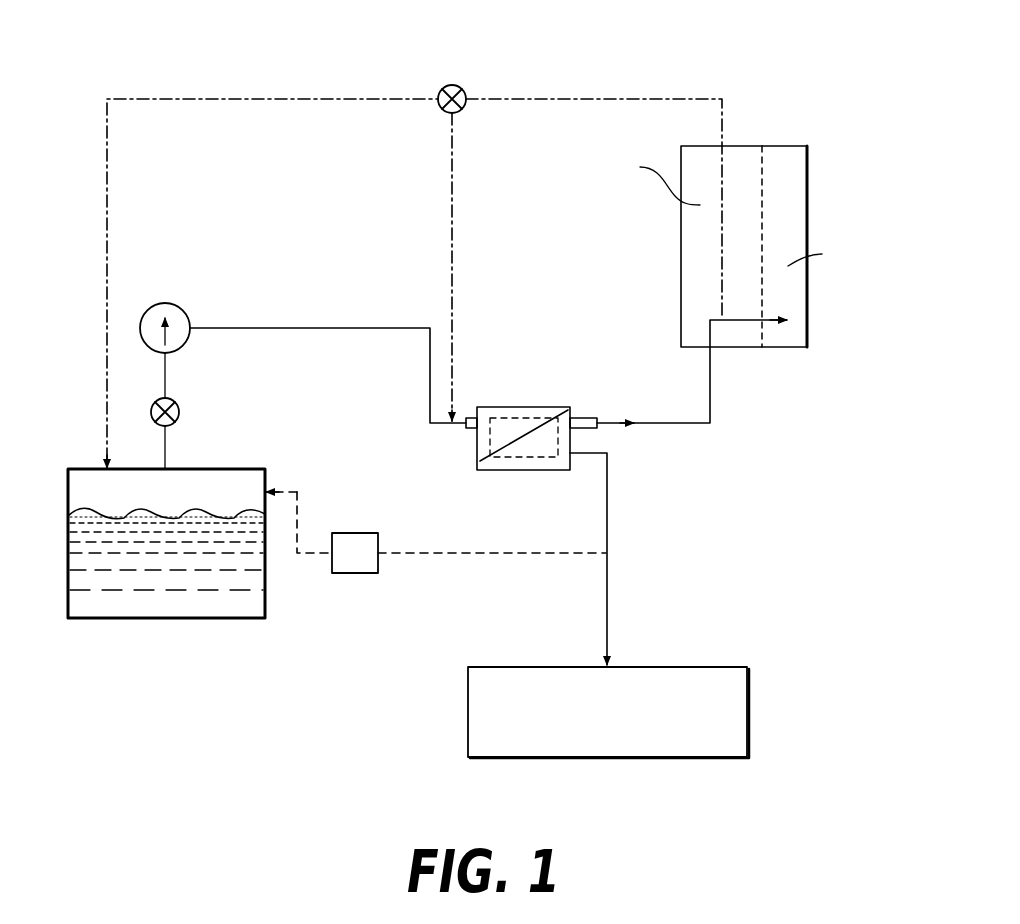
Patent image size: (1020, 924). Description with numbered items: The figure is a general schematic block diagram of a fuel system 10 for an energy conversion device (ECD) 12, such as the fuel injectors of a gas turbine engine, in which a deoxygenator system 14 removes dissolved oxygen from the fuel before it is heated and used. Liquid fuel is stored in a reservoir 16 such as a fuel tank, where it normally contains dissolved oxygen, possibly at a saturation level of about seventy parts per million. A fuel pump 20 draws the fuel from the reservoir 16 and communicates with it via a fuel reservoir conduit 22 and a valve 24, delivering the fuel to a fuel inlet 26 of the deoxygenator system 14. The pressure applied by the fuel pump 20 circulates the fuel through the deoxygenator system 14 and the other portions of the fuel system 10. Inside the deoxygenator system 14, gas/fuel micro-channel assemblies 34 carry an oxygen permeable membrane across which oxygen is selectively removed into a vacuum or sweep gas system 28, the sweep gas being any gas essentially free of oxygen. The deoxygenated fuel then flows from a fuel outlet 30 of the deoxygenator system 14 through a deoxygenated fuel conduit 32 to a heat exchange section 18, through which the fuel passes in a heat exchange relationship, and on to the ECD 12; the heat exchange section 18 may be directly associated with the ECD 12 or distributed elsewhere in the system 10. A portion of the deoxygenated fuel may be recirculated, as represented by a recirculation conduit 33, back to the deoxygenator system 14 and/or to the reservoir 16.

The fuel system 10 is at (690, 177).
The energy conversion device (ECD) 12 is at (785, 163).
The deoxygenator system 14 is at (511, 384).
The reservoir 16 is at (93, 612).
The heat exchange section 18 is at (692, 274).
The fuel pump 20 is at (166, 303).
The fuel reservoir conduit 22 is at (167, 378).
The valve 24 is at (180, 412).
The fuel inlet 26 is at (472, 431).
The vacuum or sweep gas system 28 is at (664, 517).
The fuel outlet 30 is at (579, 417).
The deoxygenated fuel conduit 32 is at (712, 410).
The recirculation conduit 33 is at (556, 98).
The gas/fuel micro-channel assemblies 34 is at (508, 413).